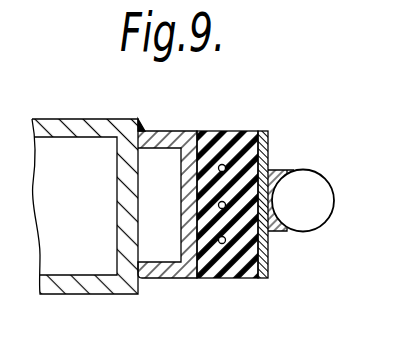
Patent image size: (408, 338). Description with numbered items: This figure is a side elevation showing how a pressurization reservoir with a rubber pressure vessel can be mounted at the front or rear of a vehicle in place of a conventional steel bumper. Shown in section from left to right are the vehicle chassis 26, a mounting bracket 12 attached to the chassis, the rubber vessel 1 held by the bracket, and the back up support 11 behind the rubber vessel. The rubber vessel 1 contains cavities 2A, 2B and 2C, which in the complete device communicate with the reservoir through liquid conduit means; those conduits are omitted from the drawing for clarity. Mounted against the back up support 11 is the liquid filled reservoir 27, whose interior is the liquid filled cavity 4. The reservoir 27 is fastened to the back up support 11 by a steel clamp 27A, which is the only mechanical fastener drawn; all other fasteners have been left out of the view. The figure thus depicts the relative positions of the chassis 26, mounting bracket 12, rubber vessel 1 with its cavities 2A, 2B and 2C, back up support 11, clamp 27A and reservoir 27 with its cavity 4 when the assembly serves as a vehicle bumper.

The rubber vessel 1 is at (243, 279).
The rubber vessel cavity 2A is at (222, 164).
The rubber vessel cavity 2B is at (218, 202).
The rubber vessel cavity 2C is at (221, 244).
The liquid filled cavity 4 is at (302, 209).
The back up support 11 is at (263, 131).
The mounting bracket 12 is at (170, 268).
The vehicle chassis 26 is at (88, 275).
The liquid filled reservoir 27 is at (321, 201).
The steel clamp 27A is at (290, 170).